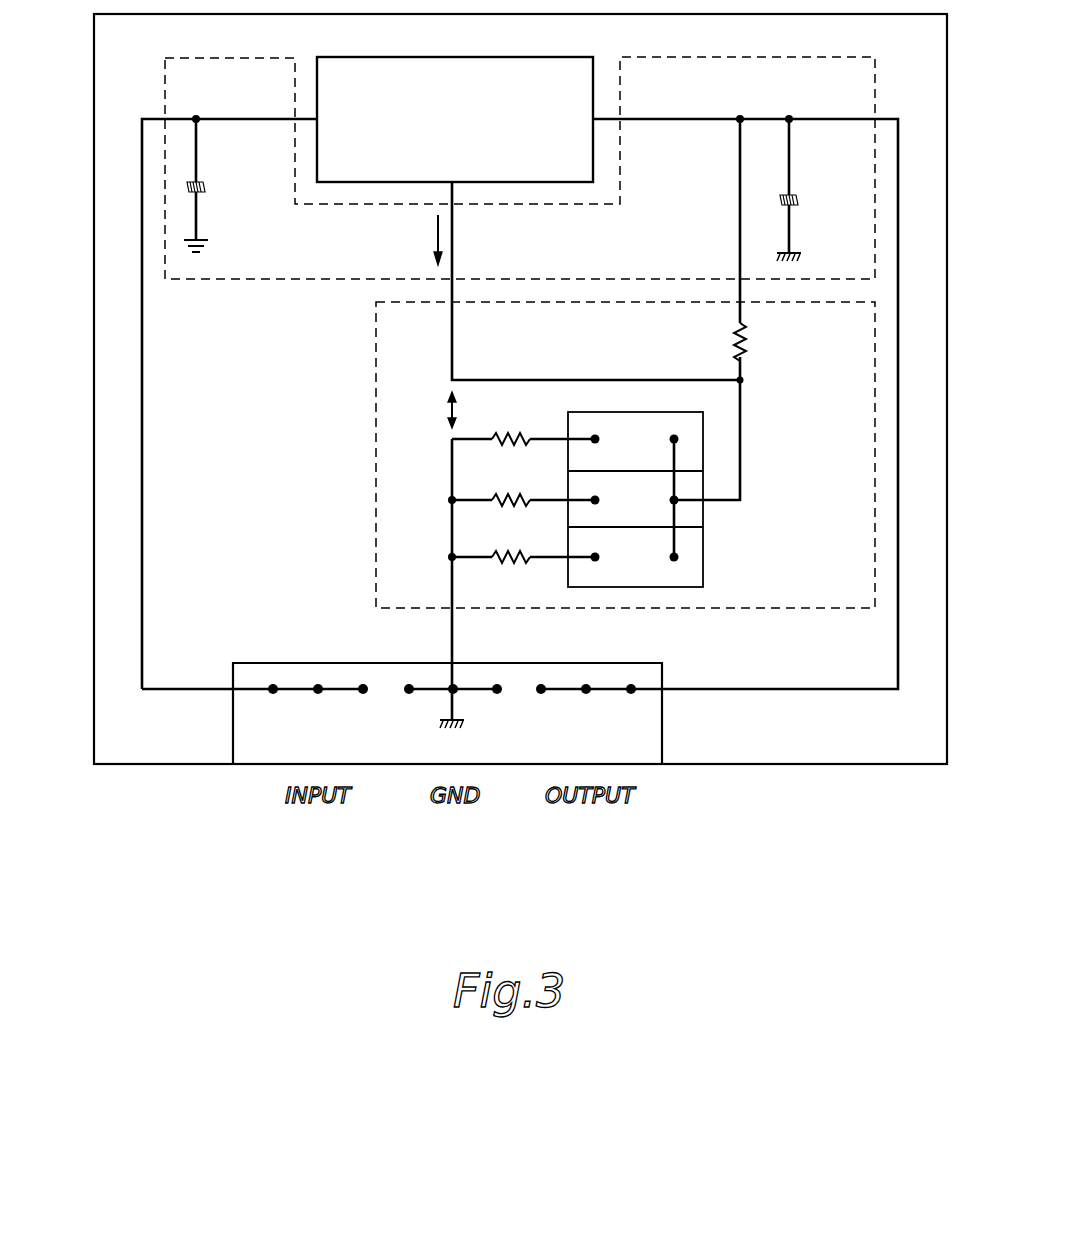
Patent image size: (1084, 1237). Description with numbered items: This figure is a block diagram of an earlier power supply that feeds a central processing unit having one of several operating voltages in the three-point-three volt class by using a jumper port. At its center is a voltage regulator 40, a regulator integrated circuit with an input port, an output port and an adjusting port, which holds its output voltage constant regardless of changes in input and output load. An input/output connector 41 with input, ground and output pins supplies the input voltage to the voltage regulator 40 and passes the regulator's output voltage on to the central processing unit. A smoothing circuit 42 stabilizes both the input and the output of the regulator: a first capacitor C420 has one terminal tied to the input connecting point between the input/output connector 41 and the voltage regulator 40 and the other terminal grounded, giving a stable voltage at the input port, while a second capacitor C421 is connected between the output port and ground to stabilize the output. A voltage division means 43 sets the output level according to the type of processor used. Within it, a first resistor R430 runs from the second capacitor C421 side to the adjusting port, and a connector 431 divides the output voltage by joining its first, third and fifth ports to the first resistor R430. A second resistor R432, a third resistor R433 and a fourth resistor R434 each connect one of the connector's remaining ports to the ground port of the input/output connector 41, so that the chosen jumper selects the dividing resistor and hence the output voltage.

The voltage regulator 40 is at (455, 57).
The input/output connector 41 is at (255, 757).
The smoothing circuit 42 is at (520, 150).
The voltage division means 43 is at (597, 455).
The connector 431 is at (704, 560).
The first capacitor C420 is at (230, 185).
The second capacitor C421 is at (818, 190).
The first resistor R430 is at (774, 342).
The second resistor R432 is at (523, 425).
The third resistor R433 is at (523, 487).
The fourth resistor R434 is at (523, 544).